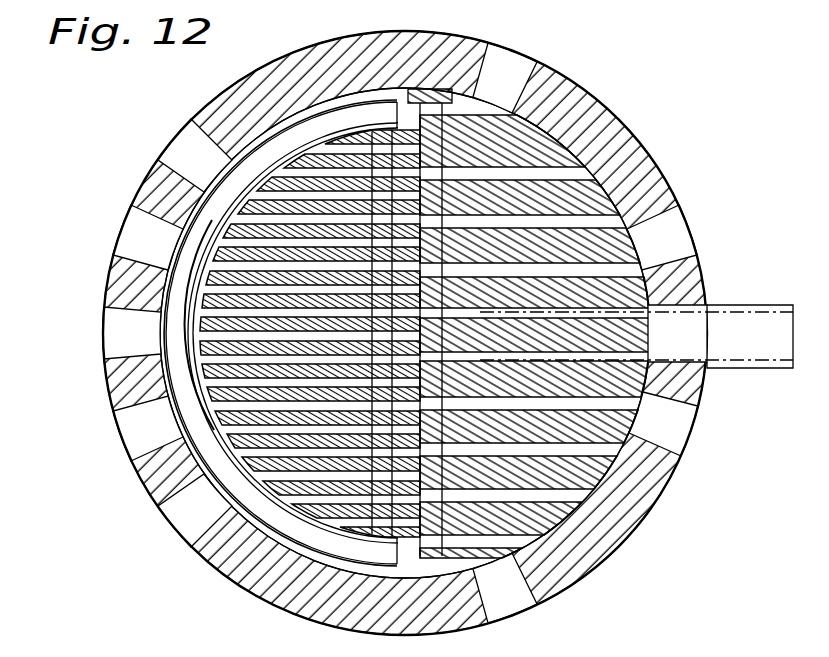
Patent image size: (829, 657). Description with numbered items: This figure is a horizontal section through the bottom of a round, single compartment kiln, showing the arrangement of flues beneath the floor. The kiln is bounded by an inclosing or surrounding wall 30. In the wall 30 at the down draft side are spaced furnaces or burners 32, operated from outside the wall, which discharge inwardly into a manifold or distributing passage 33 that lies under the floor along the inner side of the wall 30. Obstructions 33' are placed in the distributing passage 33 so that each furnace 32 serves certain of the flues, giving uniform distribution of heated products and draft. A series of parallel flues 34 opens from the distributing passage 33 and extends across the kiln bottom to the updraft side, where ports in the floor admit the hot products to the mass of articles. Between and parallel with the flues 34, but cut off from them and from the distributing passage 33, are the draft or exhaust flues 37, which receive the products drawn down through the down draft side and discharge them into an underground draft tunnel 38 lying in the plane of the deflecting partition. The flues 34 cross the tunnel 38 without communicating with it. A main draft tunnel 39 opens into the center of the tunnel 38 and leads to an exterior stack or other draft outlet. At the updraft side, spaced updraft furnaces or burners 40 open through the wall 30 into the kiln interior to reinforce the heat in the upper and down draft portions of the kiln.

The inclosing or surrounding wall 30 is at (699, 291).
The furnaces or other burners 32 is at (195, 143).
The manifold or distributing passage or chamber 33 is at (281, 296).
The obstruction 33' is at (136, 247).
The parallel flues 34 is at (598, 468).
The draft or exhaust flues 37 is at (218, 289).
The underground draft or discharge tunnel or flue 38 is at (482, 50).
The main draft tunnel or depressed passage 39 is at (752, 365).
The updraft furnaces or other suitable burners 40 is at (515, 65).